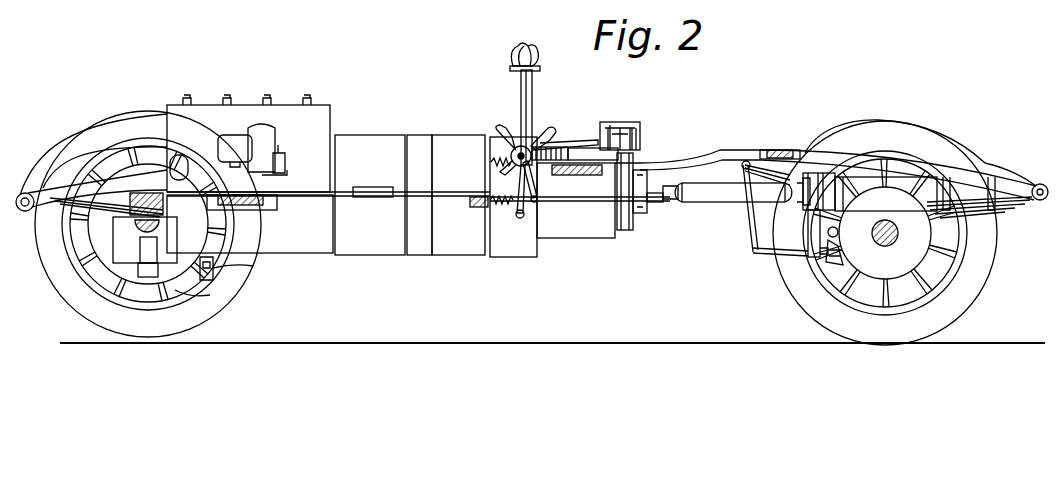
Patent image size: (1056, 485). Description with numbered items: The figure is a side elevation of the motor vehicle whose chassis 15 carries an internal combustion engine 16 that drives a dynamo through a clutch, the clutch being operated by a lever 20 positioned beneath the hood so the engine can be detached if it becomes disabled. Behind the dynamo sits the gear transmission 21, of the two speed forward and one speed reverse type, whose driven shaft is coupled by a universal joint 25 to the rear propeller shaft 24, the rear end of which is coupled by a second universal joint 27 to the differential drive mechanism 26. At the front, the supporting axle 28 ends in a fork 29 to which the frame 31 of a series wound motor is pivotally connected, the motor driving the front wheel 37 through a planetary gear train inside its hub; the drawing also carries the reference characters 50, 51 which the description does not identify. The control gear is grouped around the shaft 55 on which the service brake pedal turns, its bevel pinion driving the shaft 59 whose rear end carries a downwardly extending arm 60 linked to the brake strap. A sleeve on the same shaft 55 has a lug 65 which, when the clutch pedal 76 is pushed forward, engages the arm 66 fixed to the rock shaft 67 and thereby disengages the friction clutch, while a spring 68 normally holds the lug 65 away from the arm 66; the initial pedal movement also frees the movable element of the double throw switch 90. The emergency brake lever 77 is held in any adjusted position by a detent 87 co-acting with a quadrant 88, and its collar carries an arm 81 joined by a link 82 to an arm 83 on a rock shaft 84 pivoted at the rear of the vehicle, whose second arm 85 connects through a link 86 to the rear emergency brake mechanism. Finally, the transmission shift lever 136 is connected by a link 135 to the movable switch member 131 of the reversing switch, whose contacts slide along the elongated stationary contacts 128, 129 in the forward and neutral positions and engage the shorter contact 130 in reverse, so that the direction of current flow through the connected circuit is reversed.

The chassis 15 is at (983, 160).
The internal combustion engine 16 is at (337, 135).
The lever 20 is at (383, 198).
The gear transmission 21 is at (612, 238).
The rear propeller shaft 24 is at (712, 202).
The universal joint 25 is at (641, 212).
The differential drive mechanism 26 is at (920, 235).
The universal joint 27 is at (808, 210).
The front supporting axle 28 is at (182, 231).
The fork 29 is at (200, 293).
The frame 31 is at (128, 248).
The wheel 37 is at (142, 126).
The bracket 50 is at (230, 262).
The link 51 is at (212, 280).
The shaft 55 is at (525, 170).
The shaft 59 is at (606, 160).
The downwardly extending arm 60 is at (655, 165).
The lug 65 is at (503, 172).
The arm 66 is at (538, 200).
The rock shaft 67 is at (520, 218).
The spring 68 is at (495, 163).
The clutch pedal 76 is at (510, 153).
The emergency brake lever 77 is at (521, 90).
The arm 81 is at (532, 175).
The link 82 is at (680, 203).
The arm 83 is at (745, 166).
The rock shaft 84 is at (748, 162).
The second arm 85 is at (752, 232).
The link 86 is at (772, 254).
The detent 87 is at (541, 69).
The quadrant 88 is at (516, 135).
The double throw switch 90 is at (592, 146).
The stationary elongated contact 128 is at (614, 142).
The stationary elongated contact 129 is at (640, 126).
The shorter contact 130 is at (640, 142).
The movable switch member 131 is at (612, 125).
The link 135 is at (552, 142).
The shift lever 136 is at (542, 134).